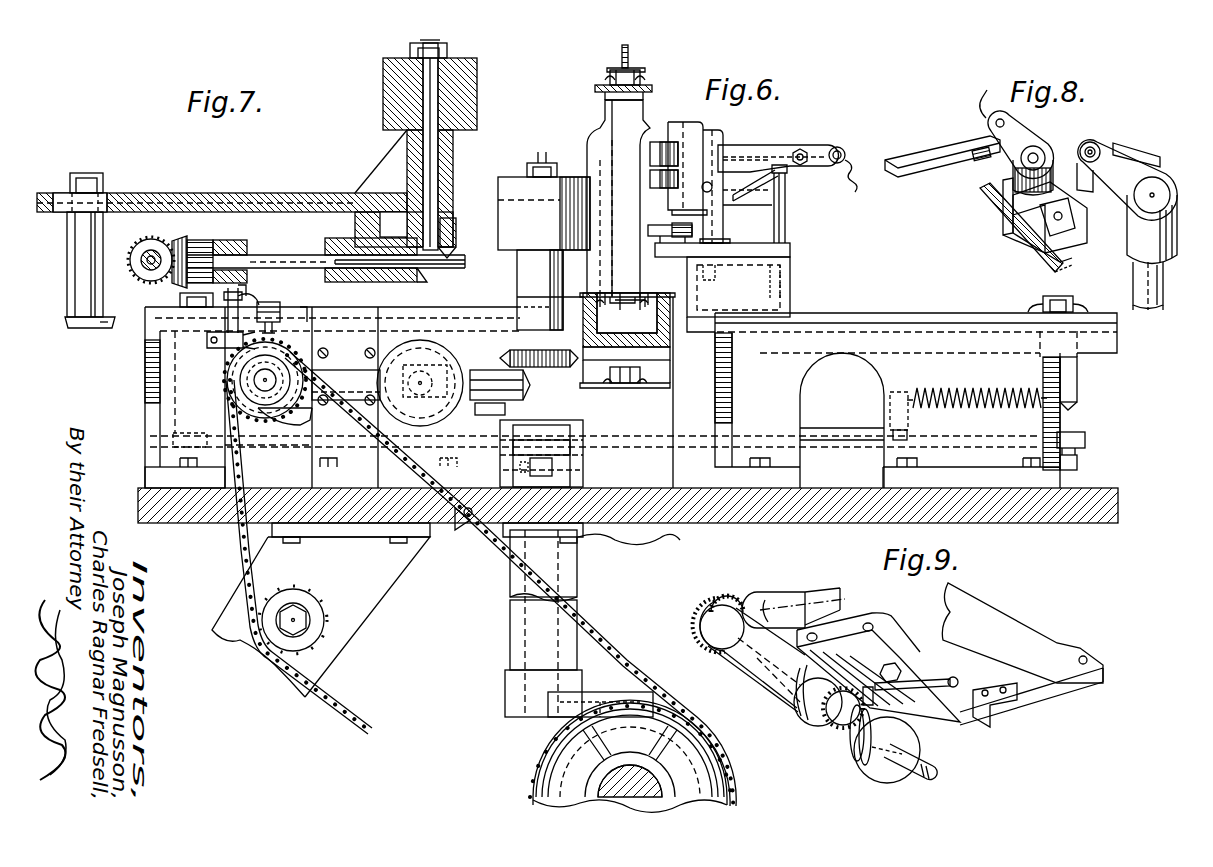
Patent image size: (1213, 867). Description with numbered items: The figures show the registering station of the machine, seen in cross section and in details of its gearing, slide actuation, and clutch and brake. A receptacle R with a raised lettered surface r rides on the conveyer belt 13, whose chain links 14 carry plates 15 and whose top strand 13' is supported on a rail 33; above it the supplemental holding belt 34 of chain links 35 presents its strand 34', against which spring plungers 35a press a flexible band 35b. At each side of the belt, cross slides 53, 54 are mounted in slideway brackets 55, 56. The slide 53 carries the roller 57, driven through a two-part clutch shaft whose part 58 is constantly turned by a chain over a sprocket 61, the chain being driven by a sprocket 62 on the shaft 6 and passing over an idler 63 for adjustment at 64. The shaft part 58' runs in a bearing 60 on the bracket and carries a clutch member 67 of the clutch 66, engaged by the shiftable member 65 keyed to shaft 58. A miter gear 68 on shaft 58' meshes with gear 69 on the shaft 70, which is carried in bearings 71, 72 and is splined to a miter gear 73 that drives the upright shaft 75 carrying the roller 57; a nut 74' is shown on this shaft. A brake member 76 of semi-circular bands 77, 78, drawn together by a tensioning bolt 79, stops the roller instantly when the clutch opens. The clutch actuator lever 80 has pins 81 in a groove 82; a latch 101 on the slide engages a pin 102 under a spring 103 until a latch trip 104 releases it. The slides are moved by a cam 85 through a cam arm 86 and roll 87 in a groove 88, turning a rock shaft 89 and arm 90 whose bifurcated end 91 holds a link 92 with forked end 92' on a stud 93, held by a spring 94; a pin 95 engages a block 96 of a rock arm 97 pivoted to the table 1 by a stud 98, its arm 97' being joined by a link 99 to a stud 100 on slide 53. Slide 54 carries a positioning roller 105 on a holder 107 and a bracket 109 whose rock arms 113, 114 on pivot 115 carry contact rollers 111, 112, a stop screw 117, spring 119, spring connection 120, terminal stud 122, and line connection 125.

In FIG. 6, the table 1 is at (660, 524).
In FIG. 8, the table 1 is at (985, 195).
In FIG. 6, the shaft 6 is at (665, 775).
In FIG. 6, the conveyer belt 13 is at (627, 339).
In FIG. 6, the top strand of the belt 13' is at (541, 290).
In FIG. 6, the chain links 14 is at (648, 375).
In FIG. 6, the plates 15 is at (660, 388).
In FIG. 6, the rail 33 is at (668, 347).
In FIG. 6, the supplemental belt 34 is at (641, 83).
In FIG. 6, the strand of the upper holding belt 34' is at (605, 104).
In FIG. 6, the chain links 35 is at (642, 78).
In FIG. 6, the spring plungers 35a is at (622, 55).
In FIG. 6, the flexible band 35b is at (607, 70).
In FIG. 7, the cross slide 53 is at (356, 193).
In FIG. 6, the cross slide 53 is at (485, 300).
In FIG. 6, the cross slide 54 is at (733, 315).
In FIG. 6, the slideway bracket 55 is at (145, 420).
In FIG. 6, the slideway bracket 56 is at (1065, 462).
In FIG. 7, the roller 57 is at (465, 94).
In FIG. 6, the roller 57 is at (544, 213).
In FIG. 6, the clutch shaft 58 is at (246, 384).
In FIG. 9, the clutch shaft 58 is at (926, 773).
In FIG. 7, the clutch shaft 58' is at (132, 281).
In FIG. 9, the clutch shaft 58' is at (754, 660).
In FIG. 6, the bearing 60 is at (368, 370).
In FIG. 9, the bearing 60 is at (860, 628).
In FIG. 6, the sprocket 61 is at (300, 422).
In FIG. 6, the sprocket 62 is at (533, 795).
In FIG. 6, the idler 63 is at (323, 625).
In FIG. 6, the adjustment 64 is at (298, 632).
In FIG. 9, the clutch member 65 is at (878, 770).
In FIG. 9, the clutch 66 is at (852, 755).
In FIG. 9, the companion clutch member 67 is at (805, 702).
In FIG. 7, the miter gear 68 is at (147, 256).
In FIG. 9, the miter gear 68 is at (698, 632).
In FIG. 7, the miter gear 69 is at (180, 240).
In FIG. 9, the miter gear 69 is at (727, 598).
In FIG. 7, the shaft 70 is at (289, 255).
In FIG. 9, the shaft 70 is at (808, 592).
In FIG. 7, the bearing 71 is at (240, 235).
In FIG. 9, the bearing 71 is at (778, 592).
In FIG. 7, the bearing 72 is at (352, 282).
In FIG. 7, the miter gear 73 is at (427, 278).
In FIG. 7, the nut 74' is at (466, 235).
In FIG. 7, the upright shaft 75 is at (438, 158).
In FIG. 6, the upright shaft 75 is at (542, 154).
In FIG. 6, the brake member 76 is at (385, 370).
In FIG. 9, the brake member 76 is at (805, 718).
In FIG. 9, the semi-circular band 77 is at (800, 690).
In FIG. 9, the semi-circular band 78 is at (828, 728).
In FIG. 6, the tensioning bolt 79 is at (372, 348).
In FIG. 9, the tensioning bolt 79 is at (903, 662).
In FIG. 6, the clutch actuator lever 80 is at (505, 385).
In FIG. 9, the clutch actuator lever 80 is at (952, 718).
In FIG. 6, the pins 81 is at (240, 368).
In FIG. 9, the groove 82 is at (862, 752).
In FIG. 6, the cam 85 is at (540, 775).
In FIG. 6, the cam arm 86 is at (590, 692).
In FIG. 6, the roll 87 is at (672, 710).
In FIG. 6, the groove 88 is at (545, 750).
In FIG. 6, the rock shaft 89 is at (577, 630).
In FIG. 8, the rock shaft 89 is at (1148, 308).
In FIG. 6, the arm 90 is at (575, 468).
In FIG. 8, the arm 90 is at (1140, 172).
In FIG. 8, the bifurcated end 91 is at (1080, 146).
In FIG. 6, the link 92 is at (854, 420).
In FIG. 8, the link 92 is at (1136, 140).
In FIG. 6, the forked end 92' is at (1085, 429).
In FIG. 6, the stud 93 is at (1077, 378).
In FIG. 6, the spring 94 is at (955, 392).
In FIG. 6, the pin 95 is at (470, 520).
In FIG. 8, the pin 95 is at (1093, 147).
In FIG. 6, the block 96 is at (552, 470).
In FIG. 8, the block 96 is at (1075, 236).
In FIG. 6, the rock arm 97 is at (456, 537).
In FIG. 8, the rock arm 97 is at (1019, 248).
In FIG. 8, the arm of the rock arm 97' is at (973, 104).
In FIG. 8, the stud 98 is at (1030, 150).
In FIG. 7, the link 99 is at (97, 328).
In FIG. 6, the link 99 is at (274, 448).
In FIG. 8, the link 99 is at (920, 153).
In FIG. 7, the stud 100 is at (70, 252).
In FIG. 6, the stud 100 is at (145, 393).
In FIG. 6, the latch 101 is at (273, 315).
In FIG. 6, the pin 102 is at (290, 327).
In FIG. 6, the spring 103 is at (246, 292).
In FIG. 6, the latch trip 104 is at (312, 322).
In FIG. 6, the positioning roller 105 is at (648, 231).
In FIG. 6, the adjustable holder 107 is at (748, 250).
In FIG. 6, the adjustable bracket 109 is at (727, 216).
In FIG. 6, the contact roller 111 is at (650, 152).
In FIG. 6, the contact roller 112 is at (655, 185).
In FIG. 6, the rock arm 113 is at (757, 145).
In FIG. 6, the rock arm 114 is at (800, 149).
In FIG. 6, the pivot 115 is at (690, 122).
In FIG. 6, the stop screw 117 is at (712, 182).
In FIG. 6, the spring 119 is at (770, 186).
In FIG. 6, the spring pressed connection 120 is at (787, 172).
In FIG. 6, the terminal stud 122 is at (850, 142).
In FIG. 6, the line connection 125 is at (853, 190).
In FIG. 6, the raised lettered surface r is at (600, 152).
In FIG. 6, the receptacle R is at (610, 198).